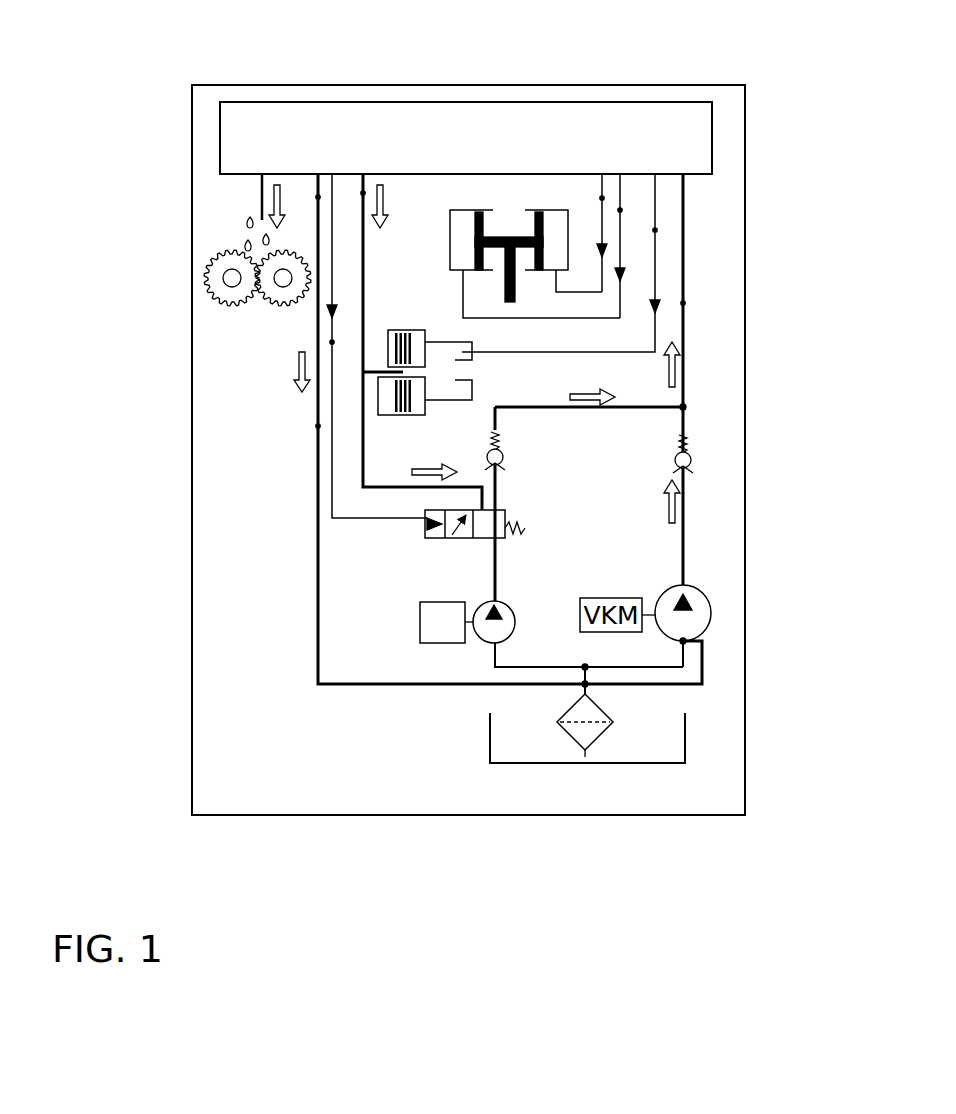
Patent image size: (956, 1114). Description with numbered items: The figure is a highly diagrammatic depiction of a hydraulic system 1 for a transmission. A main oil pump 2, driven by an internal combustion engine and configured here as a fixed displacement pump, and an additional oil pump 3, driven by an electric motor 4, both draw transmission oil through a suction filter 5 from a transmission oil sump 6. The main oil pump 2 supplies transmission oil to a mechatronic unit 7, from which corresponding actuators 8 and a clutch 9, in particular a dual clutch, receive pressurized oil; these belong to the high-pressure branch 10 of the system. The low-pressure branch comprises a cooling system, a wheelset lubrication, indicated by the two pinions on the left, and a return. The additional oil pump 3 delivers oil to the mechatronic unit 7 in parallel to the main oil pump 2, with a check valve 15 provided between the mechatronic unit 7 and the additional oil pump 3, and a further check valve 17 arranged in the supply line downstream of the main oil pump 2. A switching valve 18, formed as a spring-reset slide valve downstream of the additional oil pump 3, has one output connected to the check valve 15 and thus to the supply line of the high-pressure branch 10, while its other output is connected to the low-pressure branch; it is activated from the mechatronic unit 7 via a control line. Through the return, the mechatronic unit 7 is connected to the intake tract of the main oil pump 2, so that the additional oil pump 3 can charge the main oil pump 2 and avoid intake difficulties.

The hydraulic system 1 is at (233, 739).
The main oil pump 2 is at (710, 613).
The additional oil pump 3 is at (482, 636).
The electric motor 4 is at (421, 625).
The suction filter 5 is at (572, 735).
The transmission oil sump 6 is at (635, 763).
The mechatronic unit 7 is at (567, 120).
The actuators 8 is at (450, 197).
The clutch 9 is at (390, 430).
The high-pressure branch 10 is at (602, 198).
The check valve 15 is at (503, 460).
The check valve 17 is at (690, 458).
The switching valve 18 is at (443, 535).